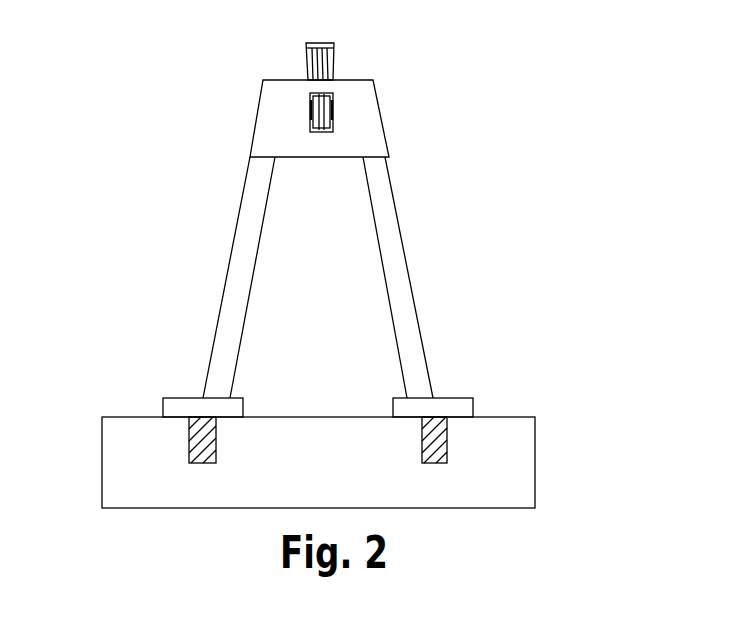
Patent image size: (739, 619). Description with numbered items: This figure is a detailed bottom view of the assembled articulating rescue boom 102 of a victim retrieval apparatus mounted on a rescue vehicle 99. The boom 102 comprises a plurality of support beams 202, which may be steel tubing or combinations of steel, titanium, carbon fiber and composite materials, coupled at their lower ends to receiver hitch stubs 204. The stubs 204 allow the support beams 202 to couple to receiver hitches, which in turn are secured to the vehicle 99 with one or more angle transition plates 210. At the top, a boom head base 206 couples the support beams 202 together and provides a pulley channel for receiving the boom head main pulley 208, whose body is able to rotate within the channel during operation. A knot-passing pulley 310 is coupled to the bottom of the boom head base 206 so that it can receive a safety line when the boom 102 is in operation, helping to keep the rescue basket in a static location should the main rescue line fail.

The rescue vehicle 99 is at (522, 437).
The articulating rescue boom 102 is at (122, 105).
The support beams 202 is at (248, 267).
The receiver hitch stubs 204 is at (422, 441).
The boom head base 206 is at (373, 133).
The boom head main pulley 208 is at (328, 58).
The angle transition plates 210 is at (403, 405).
The knot-passing pulley 310 is at (310, 115).